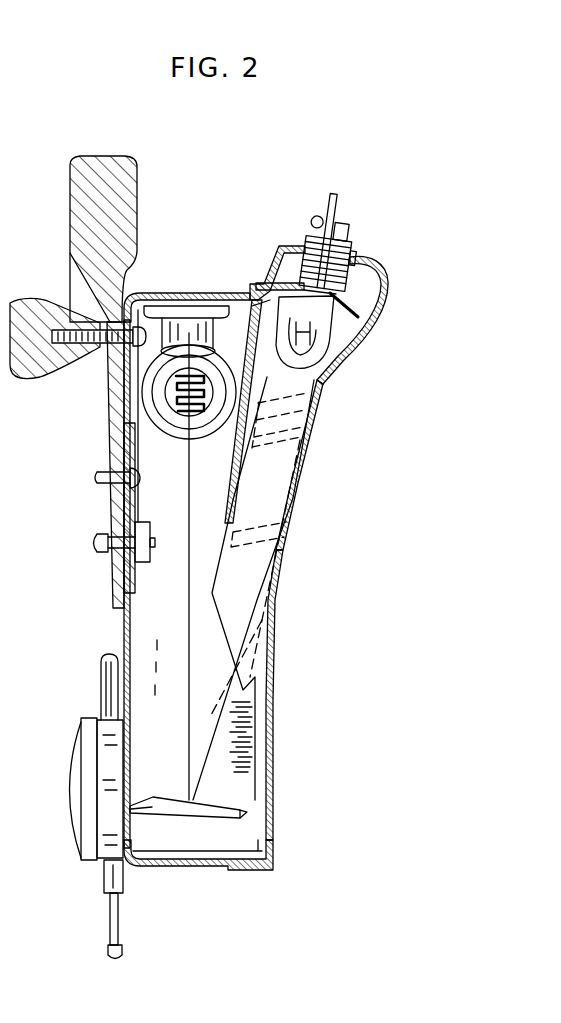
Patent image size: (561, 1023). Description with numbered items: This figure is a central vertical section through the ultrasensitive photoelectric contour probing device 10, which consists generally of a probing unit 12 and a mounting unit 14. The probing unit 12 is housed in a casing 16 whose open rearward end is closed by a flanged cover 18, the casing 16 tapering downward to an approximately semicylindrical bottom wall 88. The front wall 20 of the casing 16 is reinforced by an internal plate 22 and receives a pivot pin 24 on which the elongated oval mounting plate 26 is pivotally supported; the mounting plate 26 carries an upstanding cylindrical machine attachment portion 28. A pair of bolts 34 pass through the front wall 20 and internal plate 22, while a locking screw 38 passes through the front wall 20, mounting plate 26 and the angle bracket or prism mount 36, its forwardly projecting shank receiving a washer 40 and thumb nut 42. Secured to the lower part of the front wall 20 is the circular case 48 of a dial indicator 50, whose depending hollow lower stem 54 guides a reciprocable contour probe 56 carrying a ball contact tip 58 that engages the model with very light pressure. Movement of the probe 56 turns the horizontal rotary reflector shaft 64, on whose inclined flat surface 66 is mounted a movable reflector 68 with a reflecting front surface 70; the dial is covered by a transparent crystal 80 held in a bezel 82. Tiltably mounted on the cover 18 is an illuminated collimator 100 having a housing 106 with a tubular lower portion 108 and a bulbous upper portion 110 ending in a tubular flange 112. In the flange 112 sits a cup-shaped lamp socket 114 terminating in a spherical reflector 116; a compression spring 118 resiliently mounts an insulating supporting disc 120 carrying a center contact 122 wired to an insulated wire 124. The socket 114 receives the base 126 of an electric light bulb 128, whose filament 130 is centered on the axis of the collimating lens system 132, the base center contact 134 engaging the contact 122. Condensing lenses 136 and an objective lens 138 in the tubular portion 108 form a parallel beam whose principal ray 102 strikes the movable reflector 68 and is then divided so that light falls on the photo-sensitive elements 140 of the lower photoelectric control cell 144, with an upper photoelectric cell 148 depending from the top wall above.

The photoelectric contour probing device 10 is at (274, 263).
The probing unit 12 is at (187, 282).
The mounting unit 14 is at (70, 281).
The casing 16 is at (198, 869).
The flanged cover 18 is at (295, 695).
The front wall 20 is at (119, 584).
The internal plate 22 is at (148, 516).
The pivot pin 24 is at (135, 470).
The mounting plate 26 is at (87, 465).
The machine attachment portion 28 is at (129, 239).
The bolts 34 is at (111, 550).
The prism mount 36 is at (140, 392).
The locking screw 38 is at (186, 288).
The washer 40 is at (95, 352).
The thumb nut 42 is at (54, 354).
The dial indicator case 48 is at (127, 789).
The dial indicator 50 is at (92, 687).
The lower stem 54 is at (94, 877).
The contour probe 56 is at (134, 919).
The ball contact tip 58 is at (134, 948).
The rotary reflector shaft 64 is at (149, 822).
The inclined flat surface 66 is at (185, 817).
The movable reflector 68 is at (240, 825).
The reflecting front surface 70 is at (233, 752).
The transparent crystal 80 is at (61, 790).
The bezel 82 is at (71, 786).
The bottom wall 88 is at (197, 869).
The illuminated collimator 100 is at (305, 411).
The principal ray 102 is at (253, 588).
The collimator housing 106 is at (325, 465).
The tubular lower portion 108 is at (273, 634).
The bulbous upper portion 110 is at (368, 314).
The tubular flange 112 is at (351, 253).
The lamp socket 114 is at (368, 217).
The spherical reflector 116 is at (355, 300).
The compression spring 118 is at (298, 209).
The supporting disc 120 is at (282, 269).
The center contact 122 is at (342, 265).
The insulated wire 124 is at (353, 228).
The bulb base 126 is at (313, 313).
The electric light bulb 128 is at (320, 332).
The filament 130 is at (275, 307).
The collimating lens system 132 is at (297, 558).
The center contact of the bulb base 134 is at (303, 281).
The condensing lenses 136 is at (304, 420).
The objective lens 138 is at (284, 534).
The photo-sensitive elements 140 is at (208, 378).
The lower photoelectric control cell 144 is at (193, 566).
The upper photoelectric cell 148 is at (206, 337).